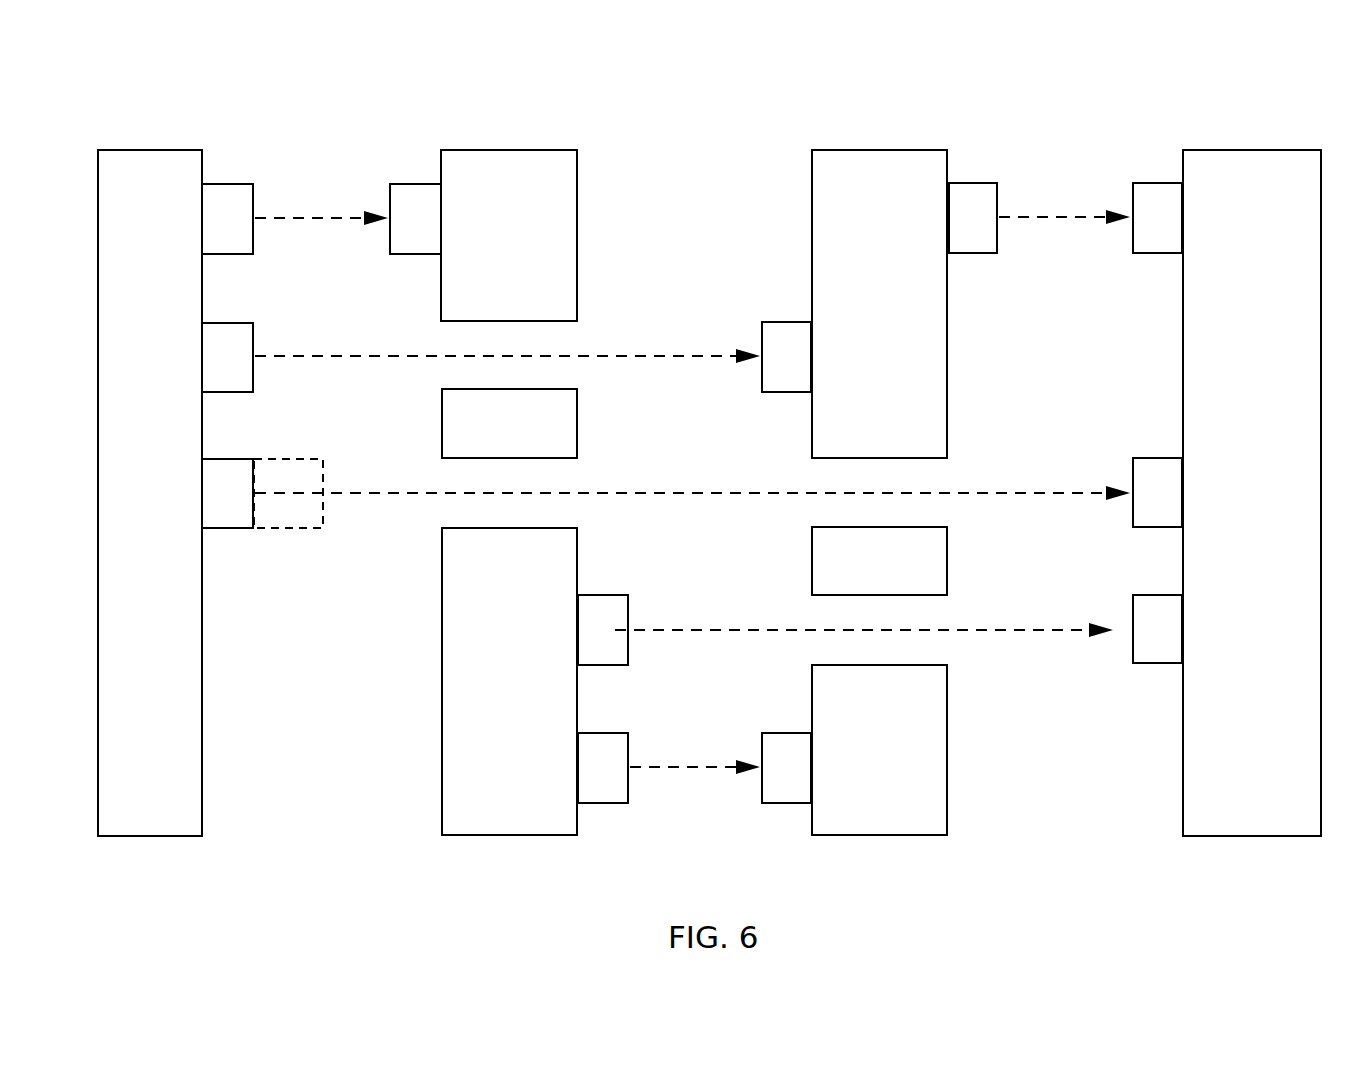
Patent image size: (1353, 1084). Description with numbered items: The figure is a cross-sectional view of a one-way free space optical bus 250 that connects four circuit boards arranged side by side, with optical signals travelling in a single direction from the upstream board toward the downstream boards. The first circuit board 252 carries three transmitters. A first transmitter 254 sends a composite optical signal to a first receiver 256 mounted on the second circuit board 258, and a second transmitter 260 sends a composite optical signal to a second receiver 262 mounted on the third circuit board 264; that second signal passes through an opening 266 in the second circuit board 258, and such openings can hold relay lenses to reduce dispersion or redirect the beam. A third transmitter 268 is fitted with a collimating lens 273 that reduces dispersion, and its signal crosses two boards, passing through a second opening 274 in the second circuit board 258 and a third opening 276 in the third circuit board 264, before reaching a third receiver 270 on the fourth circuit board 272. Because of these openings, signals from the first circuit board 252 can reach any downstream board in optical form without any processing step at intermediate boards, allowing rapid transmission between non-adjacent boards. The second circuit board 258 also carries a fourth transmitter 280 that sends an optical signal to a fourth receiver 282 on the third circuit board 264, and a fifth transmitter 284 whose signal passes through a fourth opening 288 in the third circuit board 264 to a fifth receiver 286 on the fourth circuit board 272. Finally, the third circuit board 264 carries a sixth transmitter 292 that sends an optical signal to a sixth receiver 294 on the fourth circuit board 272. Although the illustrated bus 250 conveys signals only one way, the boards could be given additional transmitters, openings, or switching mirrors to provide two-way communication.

The free space optical bus 250 is at (728, 148).
The first circuit board 252 is at (143, 150).
The first transmitter 254 is at (227, 184).
The first receiver 256 is at (415, 184).
The second circuit board 258 is at (508, 150).
The second transmitter 260 is at (227, 323).
The second receiver 262 is at (787, 322).
The third circuit board 264 is at (878, 150).
The opening 266 is at (475, 337).
The third transmitter 268 is at (227, 459).
The third receiver 270 is at (1158, 458).
The fourth circuit board 272 is at (1252, 150).
The collimating lens 273 is at (323, 517).
The second opening 274 is at (475, 474).
The third opening 276 is at (845, 474).
The fourth transmitter 280 is at (602, 733).
The fourth receiver 282 is at (788, 733).
The fifth transmitter 284 is at (602, 595).
The fifth receiver 286 is at (1158, 595).
The fourth opening 288 is at (845, 610).
The sixth transmitter 292 is at (972, 183).
The sixth receiver 294 is at (1158, 183).